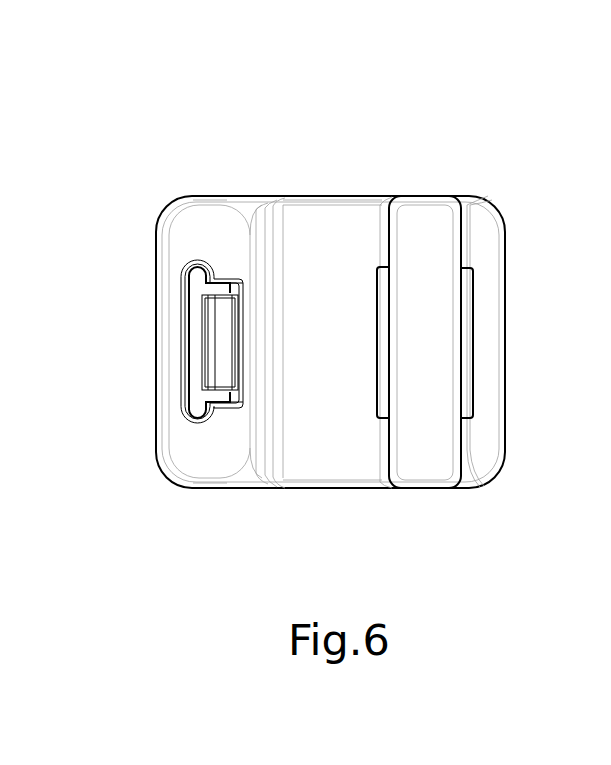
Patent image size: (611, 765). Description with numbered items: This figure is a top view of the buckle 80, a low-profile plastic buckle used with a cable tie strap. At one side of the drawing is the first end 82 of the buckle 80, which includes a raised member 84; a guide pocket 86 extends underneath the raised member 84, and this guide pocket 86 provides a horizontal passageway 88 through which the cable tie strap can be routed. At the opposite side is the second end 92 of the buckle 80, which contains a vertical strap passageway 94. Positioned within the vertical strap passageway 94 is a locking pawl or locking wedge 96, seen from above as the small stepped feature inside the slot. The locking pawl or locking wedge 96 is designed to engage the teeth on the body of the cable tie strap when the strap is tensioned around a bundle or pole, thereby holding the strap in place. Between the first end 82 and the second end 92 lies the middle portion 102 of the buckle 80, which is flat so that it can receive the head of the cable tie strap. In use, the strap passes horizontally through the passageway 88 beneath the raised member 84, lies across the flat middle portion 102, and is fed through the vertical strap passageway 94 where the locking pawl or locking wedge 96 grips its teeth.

The buckle 80 is at (376, 112).
The first end 82 is at (485, 248).
The raised member 84 is at (430, 224).
The guide pocket 86 is at (467, 270).
The horizontal passageway 88 is at (467, 392).
The second end 92 is at (167, 242).
The vertical strap passageway 94 is at (198, 394).
The locking pawl or locking wedge 96 is at (213, 340).
The middle portion 102 is at (332, 250).